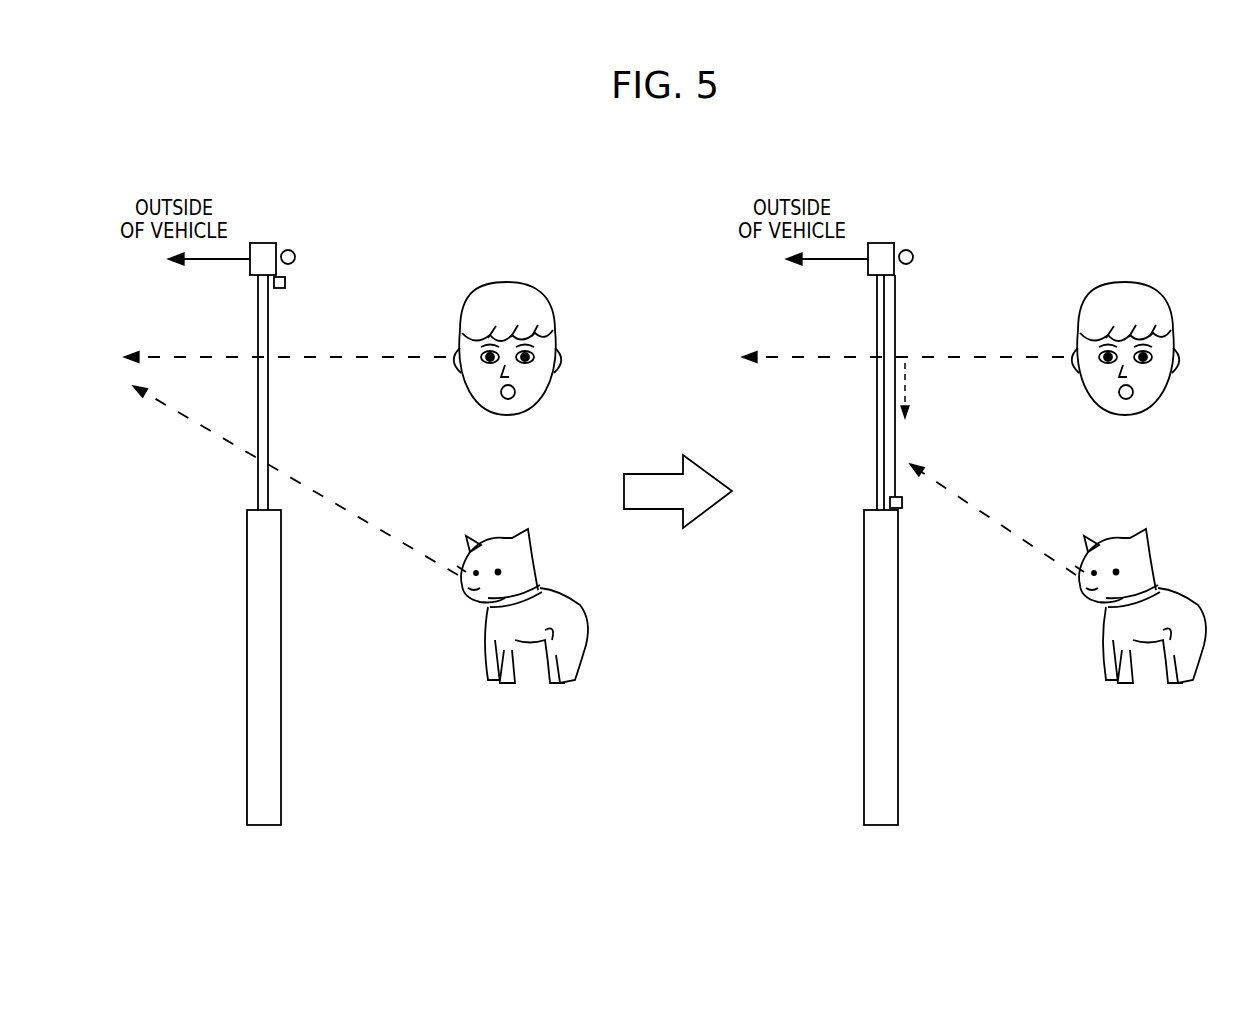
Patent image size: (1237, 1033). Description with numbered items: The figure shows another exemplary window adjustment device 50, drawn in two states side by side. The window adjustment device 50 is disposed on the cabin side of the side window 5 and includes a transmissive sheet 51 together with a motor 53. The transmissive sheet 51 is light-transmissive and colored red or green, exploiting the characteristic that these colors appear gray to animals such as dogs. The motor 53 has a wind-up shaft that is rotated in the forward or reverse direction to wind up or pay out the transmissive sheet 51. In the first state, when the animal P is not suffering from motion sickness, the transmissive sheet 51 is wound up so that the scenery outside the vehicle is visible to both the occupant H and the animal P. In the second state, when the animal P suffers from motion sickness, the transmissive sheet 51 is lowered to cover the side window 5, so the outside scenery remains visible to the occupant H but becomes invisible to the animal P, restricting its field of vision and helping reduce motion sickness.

The window adjustment device 50 is at (286, 237).
The motor 53 is at (295, 257).
The transmissive sheet 51 is at (286, 286).
The side window 5 is at (258, 322).
The occupant H is at (543, 276).
The animal P is at (563, 576).